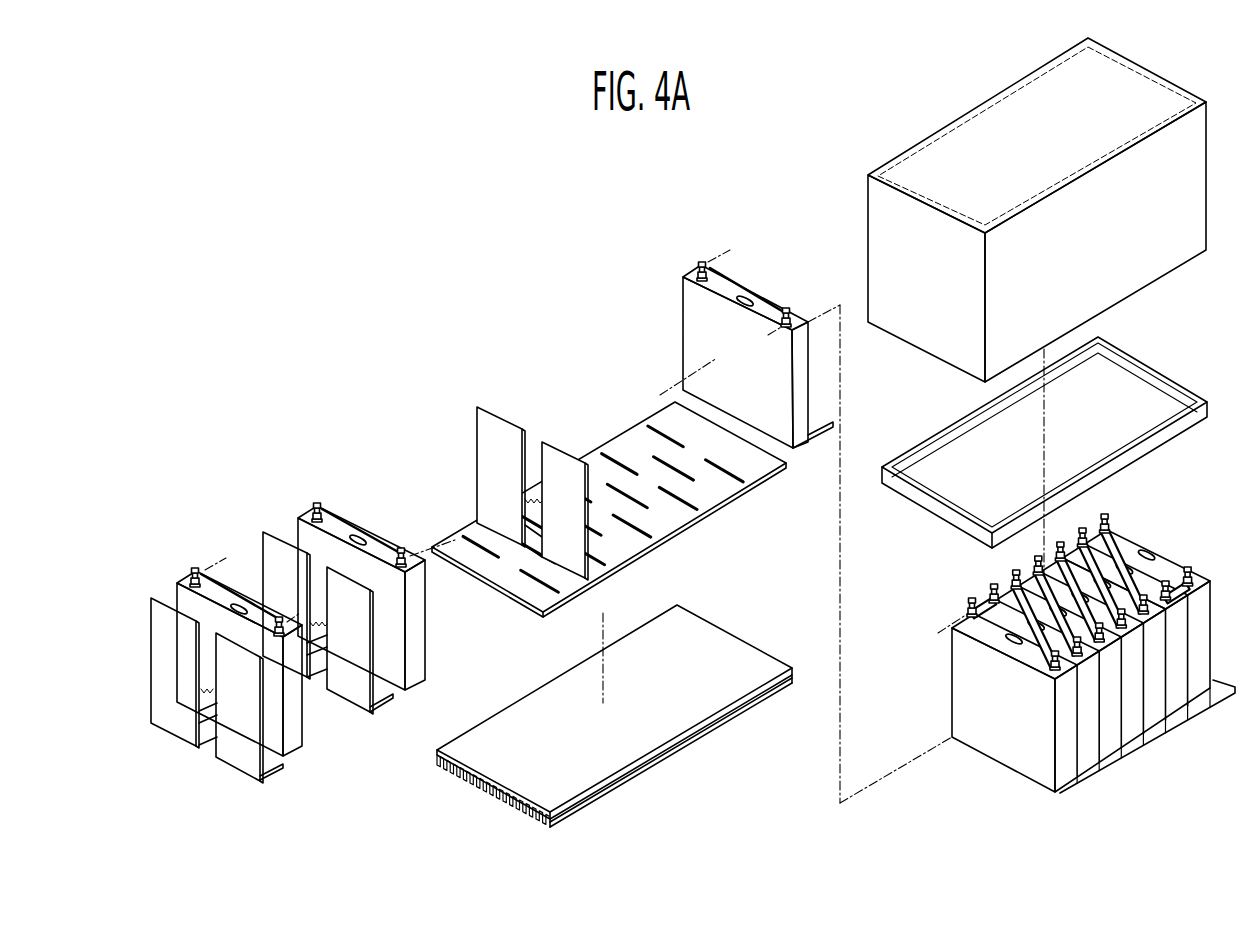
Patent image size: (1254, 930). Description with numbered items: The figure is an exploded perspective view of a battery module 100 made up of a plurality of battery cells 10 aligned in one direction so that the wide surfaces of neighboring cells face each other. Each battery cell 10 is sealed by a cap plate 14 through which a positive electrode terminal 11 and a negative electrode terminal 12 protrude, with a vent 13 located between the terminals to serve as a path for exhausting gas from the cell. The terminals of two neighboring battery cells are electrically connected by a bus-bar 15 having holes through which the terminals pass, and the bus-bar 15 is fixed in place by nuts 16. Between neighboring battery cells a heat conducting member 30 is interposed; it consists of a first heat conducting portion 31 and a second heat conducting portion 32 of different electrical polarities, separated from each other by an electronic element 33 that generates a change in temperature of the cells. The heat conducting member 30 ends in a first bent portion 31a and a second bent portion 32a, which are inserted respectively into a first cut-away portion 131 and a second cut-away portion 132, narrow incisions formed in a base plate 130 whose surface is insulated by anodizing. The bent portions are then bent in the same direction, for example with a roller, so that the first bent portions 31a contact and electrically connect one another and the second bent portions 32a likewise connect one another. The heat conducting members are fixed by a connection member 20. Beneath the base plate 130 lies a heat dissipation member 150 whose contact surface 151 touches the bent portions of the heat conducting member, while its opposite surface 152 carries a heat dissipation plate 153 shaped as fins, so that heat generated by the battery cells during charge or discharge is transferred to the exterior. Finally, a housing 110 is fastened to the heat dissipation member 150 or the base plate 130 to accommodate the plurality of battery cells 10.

The battery module 100 is at (366, 210).
The housing 110 is at (1207, 173).
The connection member 20 is at (1165, 373).
The battery cell 10 is at (1102, 630).
The positive electrode terminal 11 is at (1098, 522).
The negative electrode terminal 12 is at (1190, 564).
The vent 13 is at (1153, 550).
The cap plate 14 is at (1133, 545).
The bus-bar 15 is at (1100, 530).
The nut 16 is at (1120, 534).
The base plate 130 is at (622, 484).
The first cut-away portion 131 is at (657, 440).
The second cut-away portion 132 is at (720, 472).
The heat conducting member 30 is at (533, 458).
The first heat conducting portion 31 is at (498, 432).
The second heat conducting portion 32 is at (560, 462).
The electronic element 33 is at (527, 490).
The first bent portion 31a is at (210, 745).
The second bent portion 32a is at (270, 770).
The heat dissipation member 150 is at (614, 746).
The contact surface 151 is at (550, 800).
The opposite surface 152 is at (552, 822).
The heat dissipation plate 153 is at (547, 828).